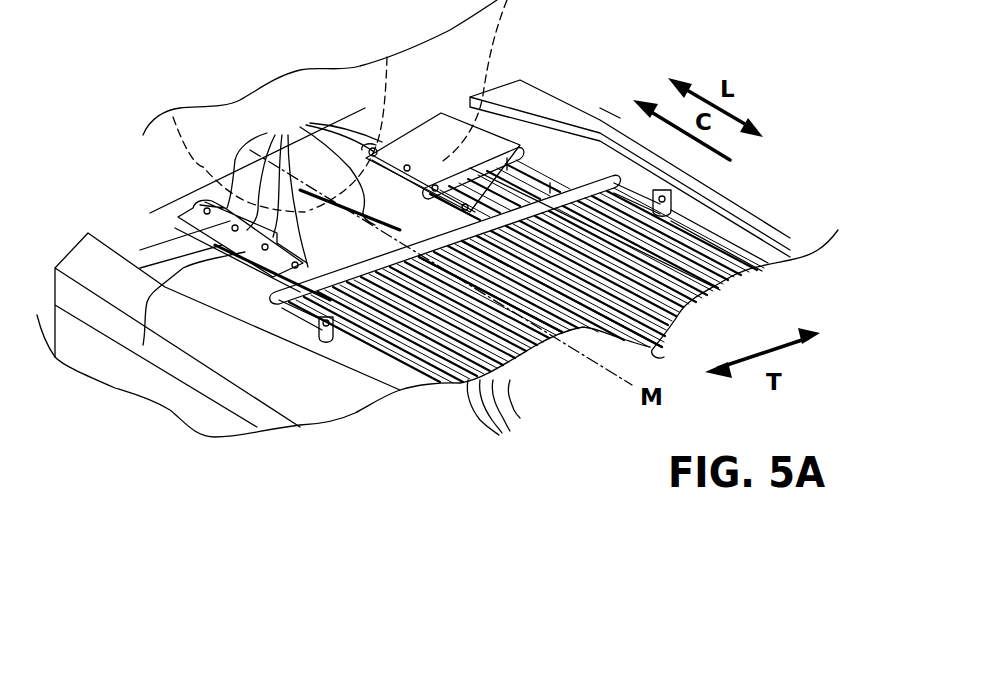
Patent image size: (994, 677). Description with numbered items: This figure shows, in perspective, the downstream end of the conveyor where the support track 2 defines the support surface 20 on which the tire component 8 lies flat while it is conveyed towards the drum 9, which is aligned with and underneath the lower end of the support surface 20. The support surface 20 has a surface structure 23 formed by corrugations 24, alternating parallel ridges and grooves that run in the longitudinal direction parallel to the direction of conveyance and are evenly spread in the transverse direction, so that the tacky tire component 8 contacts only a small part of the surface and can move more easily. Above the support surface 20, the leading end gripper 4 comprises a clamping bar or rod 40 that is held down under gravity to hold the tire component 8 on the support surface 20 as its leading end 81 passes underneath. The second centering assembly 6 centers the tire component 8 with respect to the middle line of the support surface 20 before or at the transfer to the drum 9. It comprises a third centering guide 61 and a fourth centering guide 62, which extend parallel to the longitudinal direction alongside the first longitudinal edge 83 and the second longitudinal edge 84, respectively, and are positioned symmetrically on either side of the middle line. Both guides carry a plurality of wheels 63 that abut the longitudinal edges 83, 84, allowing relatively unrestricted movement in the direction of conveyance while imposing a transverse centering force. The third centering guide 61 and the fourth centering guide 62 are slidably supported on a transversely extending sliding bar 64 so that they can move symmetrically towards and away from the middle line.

The support track 2 is at (600, 108).
The leading end gripper 4 is at (565, 198).
The second centering assembly 6 is at (178, 220).
The tire component 8 is at (585, 327).
The drum 9 is at (487, 57).
The support surface 20 is at (716, 240).
The surface structure 23 is at (745, 301).
The corrugations 24 is at (501, 418).
The clamping bar or rod 40 is at (548, 195).
The third centering guide 61 is at (195, 212).
The fourth centering guide 62 is at (404, 147).
The wheels 63 is at (313, 190).
The sliding bar 64 is at (138, 391).
The leading end 81 is at (423, 198).
The first longitudinal edge 83 is at (443, 320).
The second longitudinal edge 84 is at (536, 283).